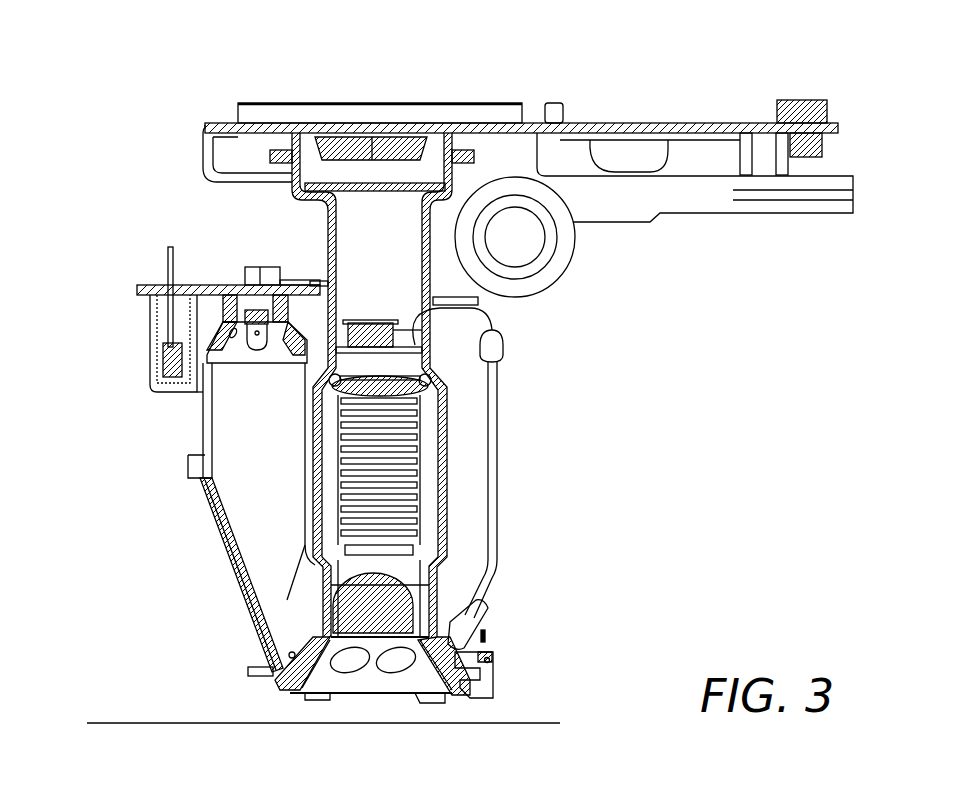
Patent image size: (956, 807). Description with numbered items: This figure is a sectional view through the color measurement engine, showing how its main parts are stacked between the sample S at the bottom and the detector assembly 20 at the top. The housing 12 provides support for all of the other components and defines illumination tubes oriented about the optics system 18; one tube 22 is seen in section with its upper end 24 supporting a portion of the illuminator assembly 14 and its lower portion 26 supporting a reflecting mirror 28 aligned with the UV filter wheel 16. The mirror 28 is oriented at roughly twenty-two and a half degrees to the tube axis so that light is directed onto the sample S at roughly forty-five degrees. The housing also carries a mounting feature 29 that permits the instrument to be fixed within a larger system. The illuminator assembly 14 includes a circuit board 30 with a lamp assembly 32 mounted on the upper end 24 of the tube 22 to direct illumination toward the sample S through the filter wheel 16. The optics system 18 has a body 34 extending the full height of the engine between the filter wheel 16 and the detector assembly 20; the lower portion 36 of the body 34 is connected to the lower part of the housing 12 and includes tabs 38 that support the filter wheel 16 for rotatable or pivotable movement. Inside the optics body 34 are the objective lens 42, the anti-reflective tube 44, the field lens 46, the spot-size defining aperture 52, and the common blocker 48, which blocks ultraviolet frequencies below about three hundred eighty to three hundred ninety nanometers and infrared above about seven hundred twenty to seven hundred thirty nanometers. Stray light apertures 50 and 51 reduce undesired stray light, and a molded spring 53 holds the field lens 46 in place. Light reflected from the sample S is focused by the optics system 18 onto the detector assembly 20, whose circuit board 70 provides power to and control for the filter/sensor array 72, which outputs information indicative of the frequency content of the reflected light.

The housing 12 is at (500, 418).
The illuminator assembly 14 is at (205, 282).
The UV filter wheel 16 is at (300, 694).
The optics system 18 is at (435, 486).
The detector assembly 20 is at (335, 104).
The illumination tube 22 is at (253, 422).
The upper end 24 is at (250, 367).
The lower portion 26 is at (287, 600).
The reflecting mirror 28 is at (290, 528).
The mounting feature 29 is at (570, 241).
The circuit board 30 is at (172, 285).
The lamp assembly 32 is at (213, 320).
The optics body 34 is at (430, 524).
The lower portion of optics body 36 is at (458, 665).
The tab 38 is at (472, 702).
The objective lens 42 is at (425, 610).
The anti-reflective tube 44 is at (432, 442).
The field lens 46 is at (405, 390).
The common blocker 48 is at (445, 328).
The stray light aperture 50 is at (385, 602).
The stray light aperture 51 is at (475, 312).
The spot-size defining aperture 52 is at (405, 352).
The molded spring 53 is at (400, 373).
The circuit board 70 is at (610, 122).
The filter/sensor array 72 is at (333, 152).
The sample S is at (135, 722).